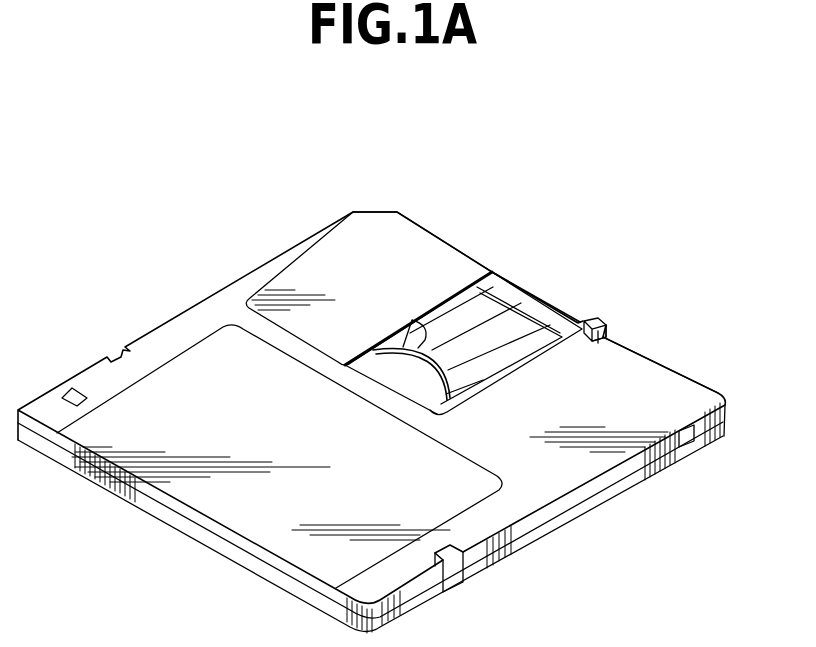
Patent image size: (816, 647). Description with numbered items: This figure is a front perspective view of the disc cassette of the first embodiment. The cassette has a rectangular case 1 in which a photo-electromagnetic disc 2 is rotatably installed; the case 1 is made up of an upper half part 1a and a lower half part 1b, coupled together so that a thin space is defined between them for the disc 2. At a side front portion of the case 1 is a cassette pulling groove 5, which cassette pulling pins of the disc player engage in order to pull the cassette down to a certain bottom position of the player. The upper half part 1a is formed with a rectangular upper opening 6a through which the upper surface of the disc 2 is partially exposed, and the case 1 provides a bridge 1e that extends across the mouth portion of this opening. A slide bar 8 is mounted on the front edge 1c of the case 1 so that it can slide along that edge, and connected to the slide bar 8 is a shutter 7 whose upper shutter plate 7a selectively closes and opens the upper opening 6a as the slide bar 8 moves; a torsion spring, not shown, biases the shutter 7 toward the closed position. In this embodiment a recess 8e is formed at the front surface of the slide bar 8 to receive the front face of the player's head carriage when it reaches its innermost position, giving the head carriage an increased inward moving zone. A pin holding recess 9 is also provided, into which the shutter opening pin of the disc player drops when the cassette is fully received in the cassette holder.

The case 1 is at (672, 548).
The upper half part 1a is at (600, 480).
The lower half part 1b is at (562, 515).
The front edge 1c is at (653, 358).
The bridge 1e is at (542, 308).
The photo-electromagnetic disc 2 is at (523, 325).
The cassette pulling groove 5 is at (692, 442).
The upper opening 6a is at (403, 340).
The shutter 7 is at (438, 226).
The upper shutter plate 7a is at (369, 250).
The slide bar 8 is at (578, 318).
The recess 8e is at (510, 282).
The pin holding recess 9 is at (603, 330).